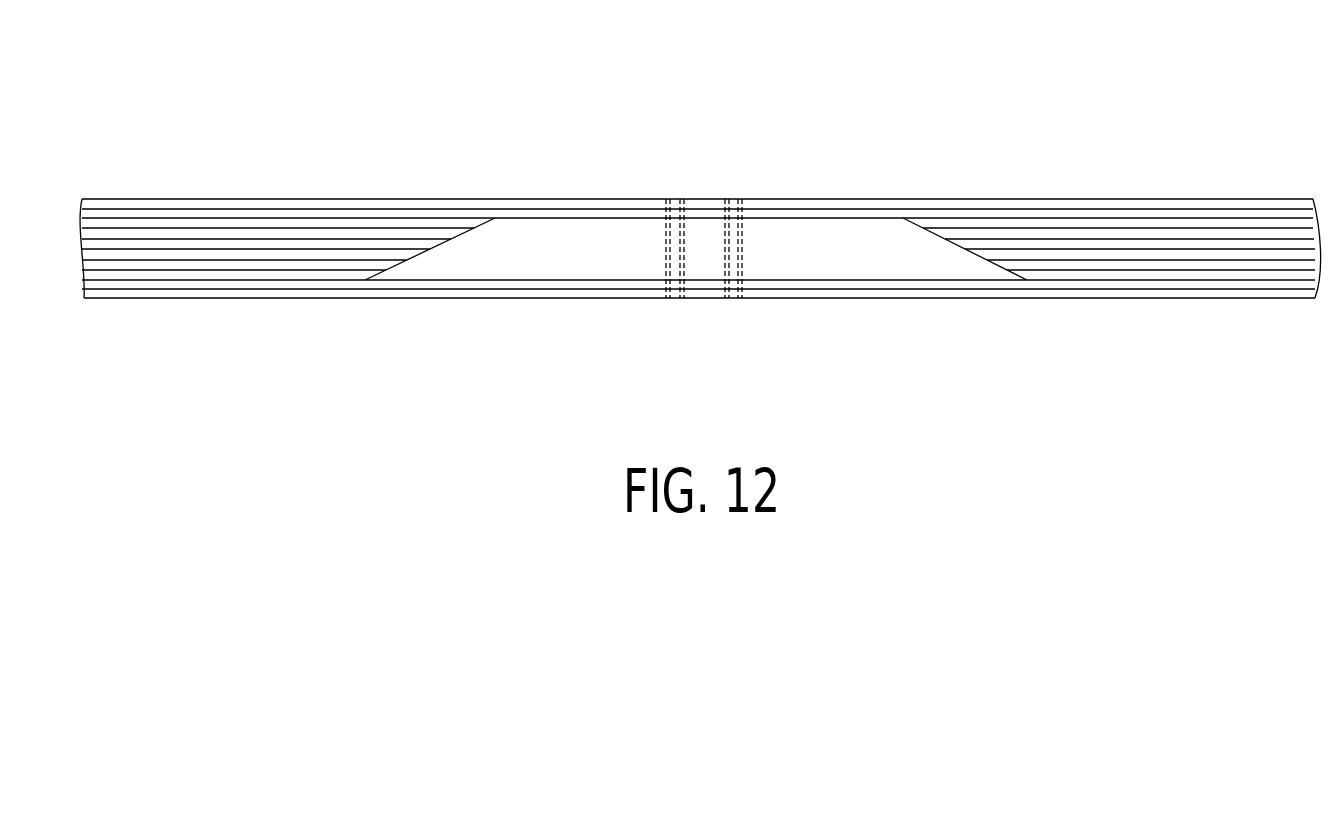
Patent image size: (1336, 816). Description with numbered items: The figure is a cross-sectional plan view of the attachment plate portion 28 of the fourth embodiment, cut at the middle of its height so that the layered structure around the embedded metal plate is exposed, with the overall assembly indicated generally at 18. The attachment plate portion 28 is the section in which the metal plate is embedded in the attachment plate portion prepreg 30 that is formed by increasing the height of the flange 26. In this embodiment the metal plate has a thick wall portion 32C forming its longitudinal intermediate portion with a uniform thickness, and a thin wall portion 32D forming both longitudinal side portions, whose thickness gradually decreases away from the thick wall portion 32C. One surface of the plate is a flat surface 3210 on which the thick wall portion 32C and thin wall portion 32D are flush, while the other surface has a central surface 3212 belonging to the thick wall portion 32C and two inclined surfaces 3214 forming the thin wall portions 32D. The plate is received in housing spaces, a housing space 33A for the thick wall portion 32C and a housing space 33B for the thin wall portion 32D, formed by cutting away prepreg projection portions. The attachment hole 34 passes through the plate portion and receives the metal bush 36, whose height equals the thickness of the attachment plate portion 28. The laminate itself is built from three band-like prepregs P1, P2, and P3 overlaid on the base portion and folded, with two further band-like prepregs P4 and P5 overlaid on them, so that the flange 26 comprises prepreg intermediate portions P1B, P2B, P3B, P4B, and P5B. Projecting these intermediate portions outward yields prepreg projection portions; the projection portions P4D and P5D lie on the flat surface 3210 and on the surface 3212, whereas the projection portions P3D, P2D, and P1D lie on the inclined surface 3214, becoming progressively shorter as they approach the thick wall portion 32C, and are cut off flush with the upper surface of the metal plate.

The wiring member 18 is at (721, 82).
The flange 26 is at (233, 199).
The attachment plate portion 28 is at (773, 199).
The attachment plate portion prepreg 30 is at (891, 196).
The thick wall portion 32C is at (628, 218).
The thin wall portion 32D is at (461, 233).
The housing space 33A is at (574, 280).
The housing space 33B is at (410, 277).
The attachment hole 34 is at (668, 248).
The metal bush 36 is at (737, 235).
The surface 3210 is at (520, 281).
The surface 3212 is at (563, 219).
The inclined surface 3214 is at (410, 252).
The band-like prepreg P1 is at (178, 242).
The band-like prepreg P2 is at (155, 230).
The band-like prepreg P3 is at (137, 223).
The band-like prepreg P4 is at (116, 212).
The band-like prepreg P5 is at (102, 203).
The prepreg intermediate portion P1B is at (1185, 245).
The prepreg intermediate portion P2B is at (1177, 242).
The prepreg intermediate portion P3B is at (1160, 227).
The prepreg intermediate portion P4B is at (1147, 217).
The prepreg intermediate portion P5B is at (1136, 208).
The prepreg projection portion P1D is at (992, 244).
The prepreg projection portion P2D is at (983, 237).
The prepreg projection portion P3D is at (970, 224).
The prepreg projection portion P4D is at (828, 212).
The prepreg projection portion P5D is at (796, 203).